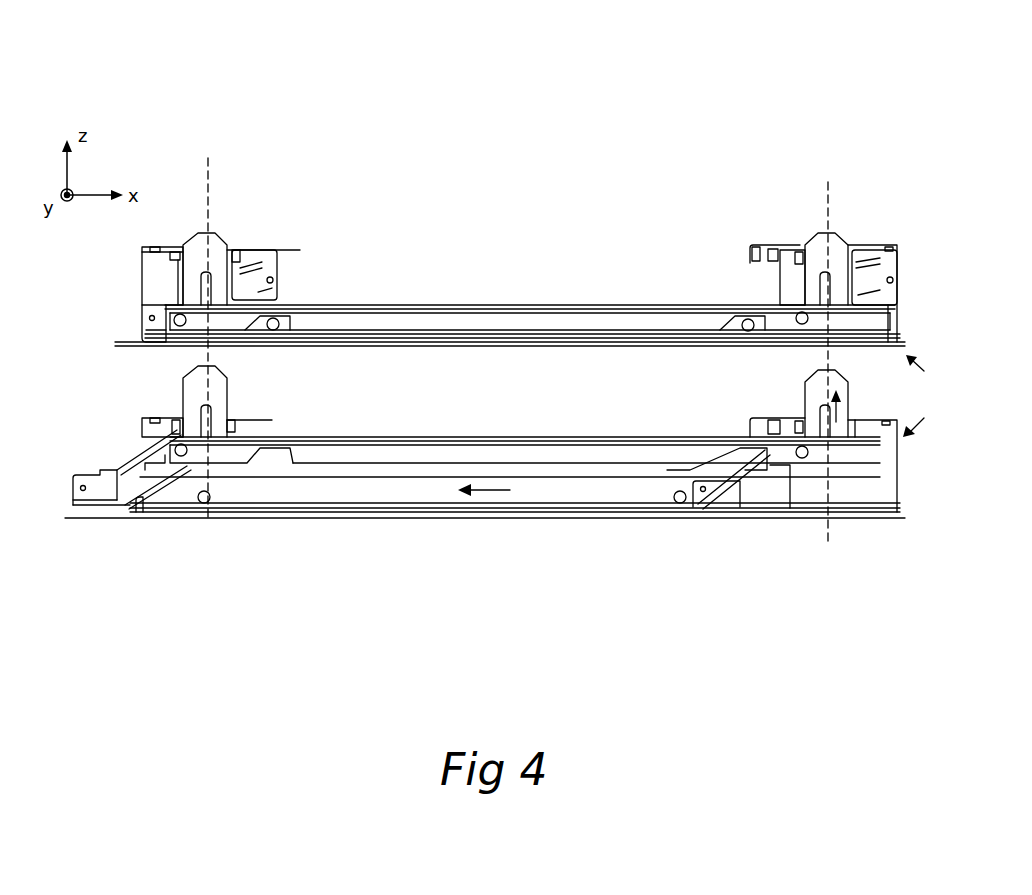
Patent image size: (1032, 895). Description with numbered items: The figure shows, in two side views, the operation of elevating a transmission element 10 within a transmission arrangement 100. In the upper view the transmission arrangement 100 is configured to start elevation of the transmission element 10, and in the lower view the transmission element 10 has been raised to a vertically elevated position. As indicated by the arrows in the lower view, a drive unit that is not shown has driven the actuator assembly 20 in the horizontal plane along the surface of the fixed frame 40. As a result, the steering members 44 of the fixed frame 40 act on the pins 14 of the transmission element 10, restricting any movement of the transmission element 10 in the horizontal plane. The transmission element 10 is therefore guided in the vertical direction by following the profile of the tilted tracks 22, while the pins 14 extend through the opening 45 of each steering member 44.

The transmission arrangement 100 is at (466, 148).
The transmission element 10 is at (528, 283).
The pins 14 is at (208, 240).
The steering members 44 is at (158, 243).
The opening 45 is at (227, 245).
The actuator assembly 20 is at (134, 306).
The tilted tracks 22 is at (132, 510).
The fixed frame 40 is at (919, 396).